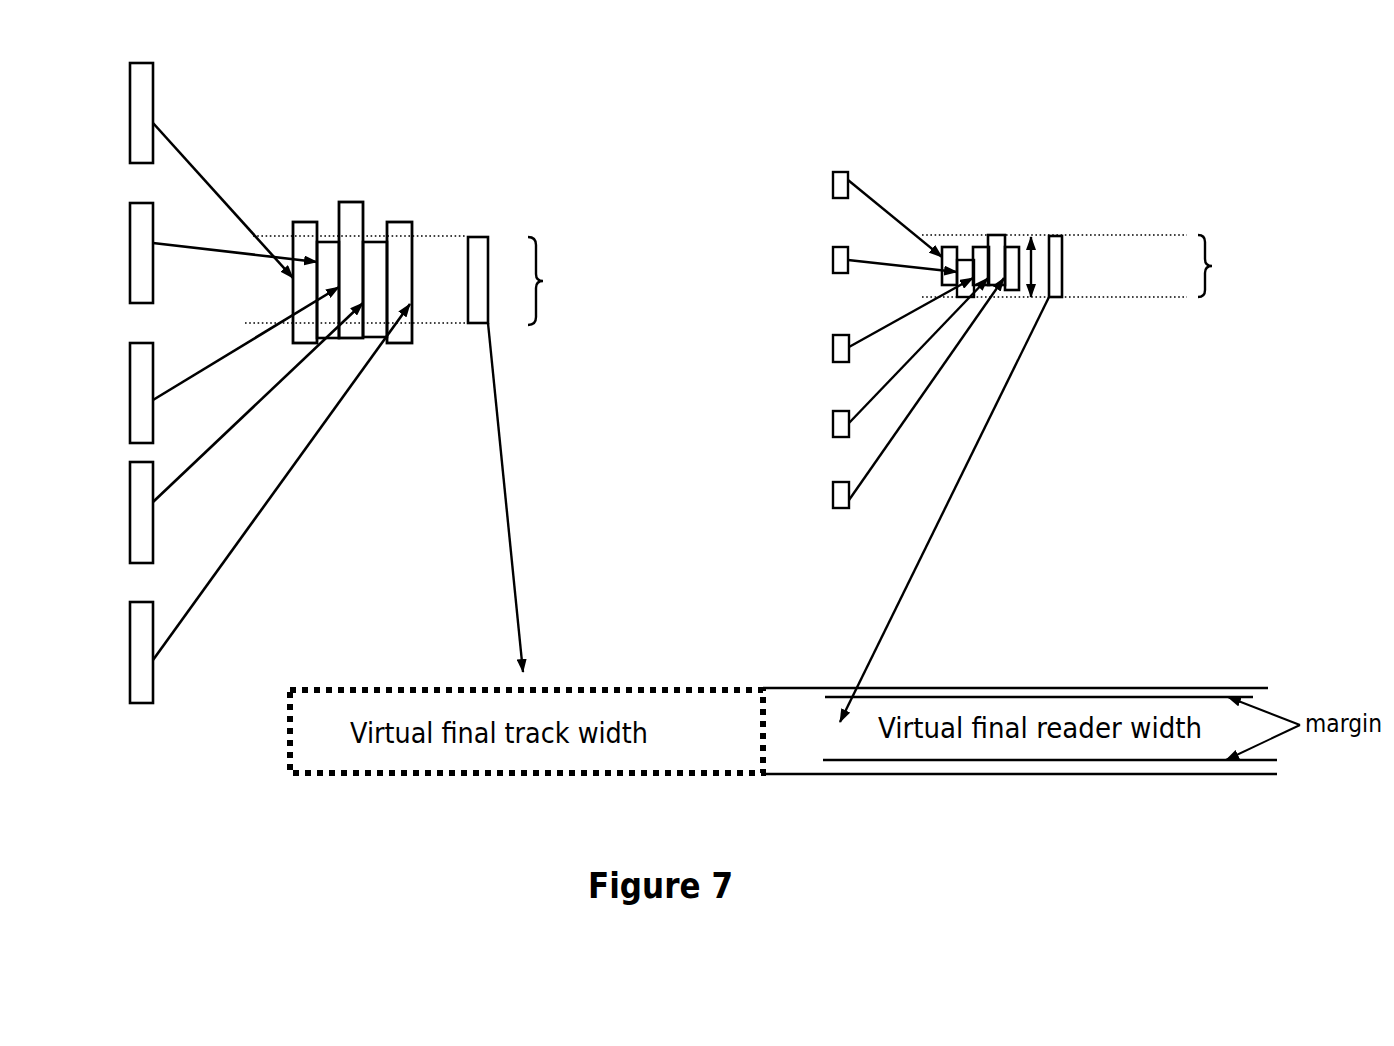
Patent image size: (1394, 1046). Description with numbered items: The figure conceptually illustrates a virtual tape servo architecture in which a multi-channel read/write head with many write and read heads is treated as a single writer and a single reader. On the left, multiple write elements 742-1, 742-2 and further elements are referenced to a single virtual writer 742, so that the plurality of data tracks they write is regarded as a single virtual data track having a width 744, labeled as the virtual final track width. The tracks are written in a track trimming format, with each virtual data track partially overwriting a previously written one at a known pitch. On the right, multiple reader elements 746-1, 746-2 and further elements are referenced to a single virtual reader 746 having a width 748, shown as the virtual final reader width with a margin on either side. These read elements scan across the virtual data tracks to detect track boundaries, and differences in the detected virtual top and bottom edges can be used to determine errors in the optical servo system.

The write element 742-1 is at (130, 99).
The write element 742-2 is at (130, 227).
The virtual writer 742 is at (488, 253).
The virtual data track width 744 is at (562, 281).
The reader element 746-1 is at (833, 183).
The reader element 746-2 is at (833, 258).
The virtual reader 746 is at (1062, 253).
The virtual read head width 748 is at (1228, 266).